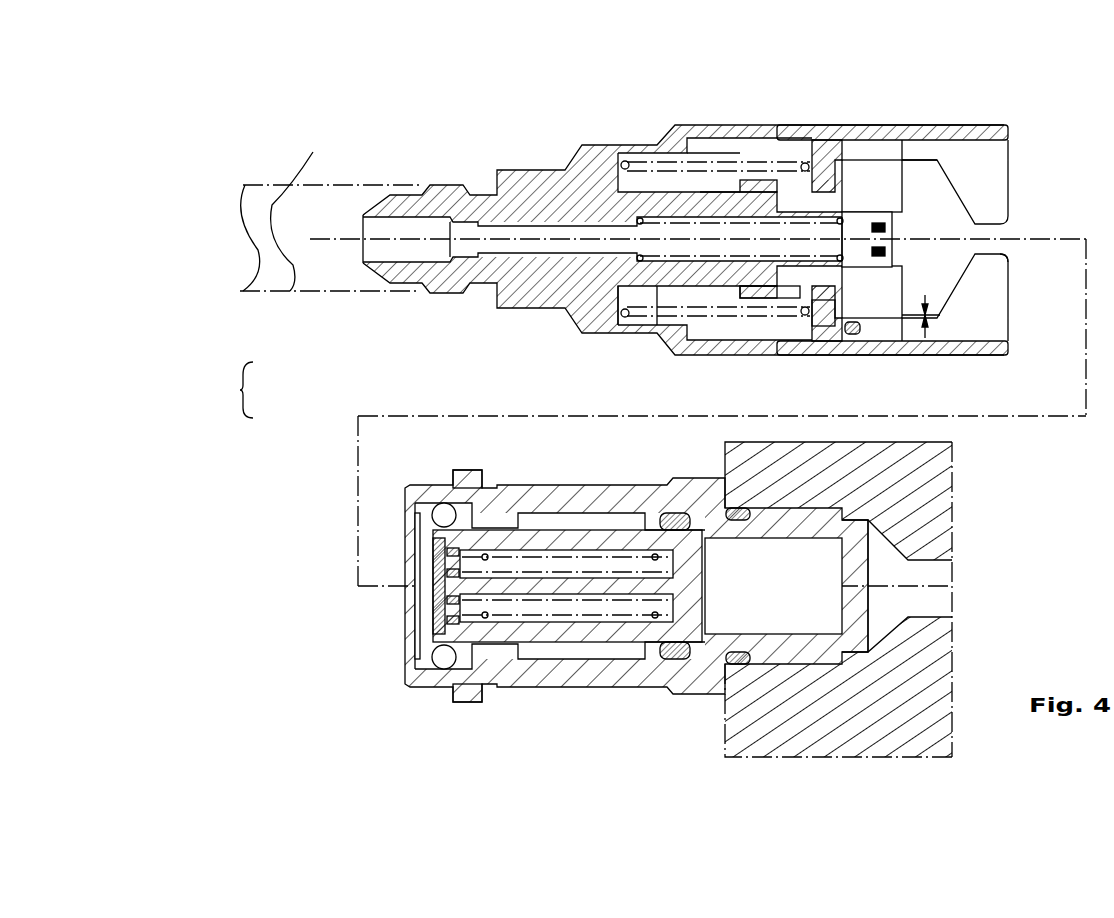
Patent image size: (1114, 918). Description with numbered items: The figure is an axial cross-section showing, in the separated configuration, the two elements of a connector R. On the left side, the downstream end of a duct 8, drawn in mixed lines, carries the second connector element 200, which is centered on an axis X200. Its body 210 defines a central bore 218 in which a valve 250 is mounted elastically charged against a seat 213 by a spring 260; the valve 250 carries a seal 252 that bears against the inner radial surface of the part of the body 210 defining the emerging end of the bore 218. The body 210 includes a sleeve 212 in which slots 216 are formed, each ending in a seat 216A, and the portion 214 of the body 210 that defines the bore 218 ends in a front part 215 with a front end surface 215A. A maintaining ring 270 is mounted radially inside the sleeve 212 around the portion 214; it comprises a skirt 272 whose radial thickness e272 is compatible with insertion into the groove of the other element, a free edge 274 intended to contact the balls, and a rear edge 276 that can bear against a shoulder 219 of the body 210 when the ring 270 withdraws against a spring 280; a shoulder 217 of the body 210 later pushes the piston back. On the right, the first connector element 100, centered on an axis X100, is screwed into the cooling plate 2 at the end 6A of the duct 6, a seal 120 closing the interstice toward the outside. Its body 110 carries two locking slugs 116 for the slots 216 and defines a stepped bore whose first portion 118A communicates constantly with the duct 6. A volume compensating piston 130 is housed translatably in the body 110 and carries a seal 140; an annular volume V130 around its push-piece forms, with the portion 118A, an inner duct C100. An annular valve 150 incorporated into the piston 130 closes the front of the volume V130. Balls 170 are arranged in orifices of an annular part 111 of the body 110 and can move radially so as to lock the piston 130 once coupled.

The duct 8 is at (330, 210).
The body 210 is at (530, 178).
The spring 280 is at (625, 152).
The portion of the body 214 is at (640, 163).
The shoulder 217 is at (710, 193).
The maintaining ring 270 is at (778, 140).
The skirt 272 is at (858, 160).
The seal 252 is at (877, 212).
The free edge 274 is at (918, 156).
The sleeve 212 is at (977, 128).
The front part 215 is at (890, 208).
The slot 216 is at (990, 233).
The front end surface 215A is at (993, 277).
The radial thickness e272 is at (946, 316).
The central bore 218 is at (739, 239).
The seat 213 is at (833, 250).
The axis X200 is at (289, 318).
The shoulder 219 is at (632, 306).
The spring 260 is at (668, 262).
The rear edge 276 is at (750, 298).
The valve 250 is at (815, 320).
The seat 216A is at (853, 348).
The connector R is at (238, 390).
The second connector element 200 is at (420, 322).
The first connector element 100 is at (389, 460).
The locking slug 116 is at (470, 470).
The body 110 is at (567, 485).
The ball 170 is at (430, 508).
The annular valve 150 is at (433, 563).
The annular part 111 is at (423, 645).
The annular volume V130 is at (522, 710).
The volume compensating piston 130 is at (580, 633).
The seal 140 is at (667, 660).
The inner duct C100 is at (714, 615).
The seal 120 is at (738, 666).
The first portion of the bore 118A is at (773, 586).
The axis X100 is at (772, 590).
The cooling plate 2 is at (935, 472).
The duct 6 is at (945, 576).
The end of the duct 6A is at (898, 605).